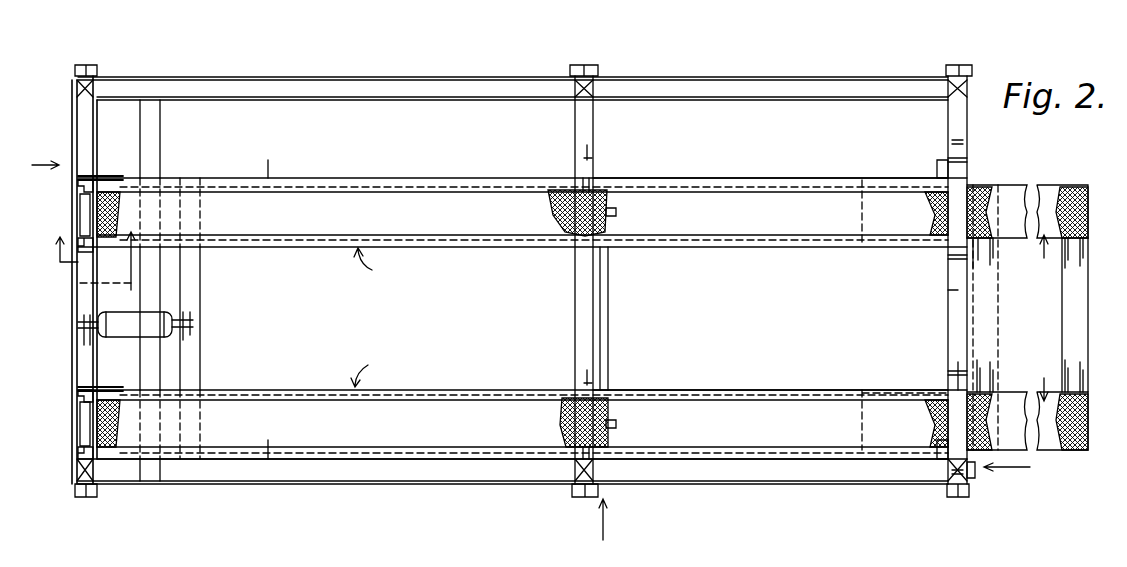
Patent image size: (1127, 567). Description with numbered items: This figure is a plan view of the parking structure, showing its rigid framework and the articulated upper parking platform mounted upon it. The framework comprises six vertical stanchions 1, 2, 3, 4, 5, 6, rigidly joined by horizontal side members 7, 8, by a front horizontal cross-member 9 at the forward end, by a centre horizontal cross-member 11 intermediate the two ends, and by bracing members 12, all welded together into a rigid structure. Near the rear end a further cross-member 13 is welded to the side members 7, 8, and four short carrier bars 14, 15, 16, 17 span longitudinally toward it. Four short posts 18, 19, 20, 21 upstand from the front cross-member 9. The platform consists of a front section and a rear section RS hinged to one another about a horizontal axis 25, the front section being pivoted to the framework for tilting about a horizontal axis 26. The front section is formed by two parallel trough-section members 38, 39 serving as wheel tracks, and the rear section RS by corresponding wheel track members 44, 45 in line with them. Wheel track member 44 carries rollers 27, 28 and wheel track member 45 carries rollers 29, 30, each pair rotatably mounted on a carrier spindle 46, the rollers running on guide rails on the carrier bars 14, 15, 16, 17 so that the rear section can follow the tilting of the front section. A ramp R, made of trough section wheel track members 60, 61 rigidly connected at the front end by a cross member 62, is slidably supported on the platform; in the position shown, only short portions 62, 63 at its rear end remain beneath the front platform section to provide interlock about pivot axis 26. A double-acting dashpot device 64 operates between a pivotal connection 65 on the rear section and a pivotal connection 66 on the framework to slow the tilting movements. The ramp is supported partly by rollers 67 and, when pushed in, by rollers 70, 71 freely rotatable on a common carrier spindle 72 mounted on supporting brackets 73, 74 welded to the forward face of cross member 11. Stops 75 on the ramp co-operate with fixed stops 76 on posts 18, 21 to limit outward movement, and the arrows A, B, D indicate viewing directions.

The vertical stanchion 1 is at (74, 84).
The vertical stanchion 2 is at (573, 74).
The vertical stanchion 3 is at (948, 74).
The vertical stanchion 4 is at (73, 478).
The vertical stanchion 5 is at (573, 478).
The vertical stanchion 6 is at (960, 498).
The horizontal side member 7 is at (268, 80).
The horizontal side member 8 is at (368, 482).
The front horizontal cross-member 9 is at (950, 291).
The centre horizontal cross-member 11 is at (577, 292).
The bracing member 12 is at (714, 97).
The further cross-member 13 is at (148, 143).
The carrier bar 14 is at (130, 176).
The carrier bar 15 is at (162, 268).
The carrier bar 16 is at (130, 390).
The carrier bar 17 is at (150, 464).
The short post 18 is at (963, 161).
The short post 19 is at (952, 260).
The short post 20 is at (952, 373).
The short post 21 is at (968, 472).
The horizontal axis 25 is at (590, 153).
The horizontal axis 26 is at (958, 143).
The roller 27 is at (78, 188).
The roller 28 is at (82, 254).
The roller 29 is at (80, 393).
The roller 30 is at (78, 452).
The trough-section member 38 is at (770, 200).
The trough-section member 39 is at (770, 416).
The wheel track member 44 is at (522, 212).
The wheel track member 45 is at (522, 424).
The carrier spindle 46 is at (85, 210).
The wheel track member 60 is at (1012, 225).
The wheel track member 61 is at (1012, 402).
The short portion of the ramp 62 is at (866, 212).
The short portion of the ramp 63 is at (864, 421).
The double-acting dashpot device 64 is at (118, 318).
The pivotal connection 65 is at (195, 323).
The pivotal connection 66 is at (78, 325).
The roller 67 is at (935, 212).
The roller 70 is at (616, 212).
The roller 71 is at (616, 424).
The common carrier spindle 72 is at (606, 283).
The supporting bracket 73 is at (606, 196).
The supporting bracket 74 is at (616, 430).
The stop 75 is at (270, 178).
The fixed stop 76 is at (946, 150).
The direction arrow A is at (45, 151).
The direction arrow B is at (1018, 468).
The direction arrow D is at (615, 519).
The ramp R is at (1043, 318).
The rear section RS is at (377, 317).